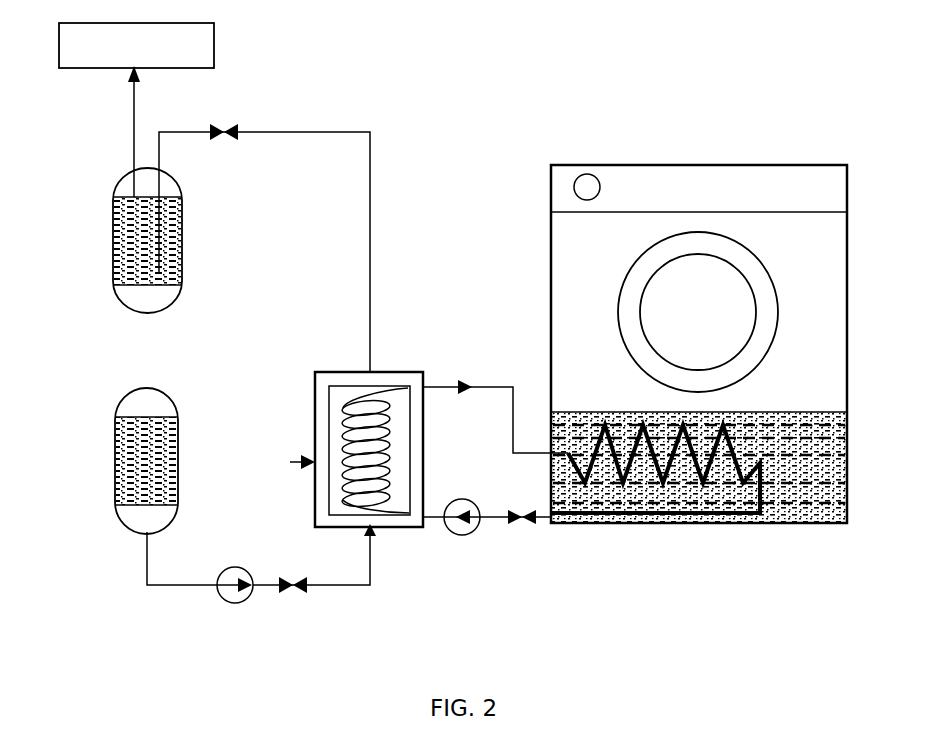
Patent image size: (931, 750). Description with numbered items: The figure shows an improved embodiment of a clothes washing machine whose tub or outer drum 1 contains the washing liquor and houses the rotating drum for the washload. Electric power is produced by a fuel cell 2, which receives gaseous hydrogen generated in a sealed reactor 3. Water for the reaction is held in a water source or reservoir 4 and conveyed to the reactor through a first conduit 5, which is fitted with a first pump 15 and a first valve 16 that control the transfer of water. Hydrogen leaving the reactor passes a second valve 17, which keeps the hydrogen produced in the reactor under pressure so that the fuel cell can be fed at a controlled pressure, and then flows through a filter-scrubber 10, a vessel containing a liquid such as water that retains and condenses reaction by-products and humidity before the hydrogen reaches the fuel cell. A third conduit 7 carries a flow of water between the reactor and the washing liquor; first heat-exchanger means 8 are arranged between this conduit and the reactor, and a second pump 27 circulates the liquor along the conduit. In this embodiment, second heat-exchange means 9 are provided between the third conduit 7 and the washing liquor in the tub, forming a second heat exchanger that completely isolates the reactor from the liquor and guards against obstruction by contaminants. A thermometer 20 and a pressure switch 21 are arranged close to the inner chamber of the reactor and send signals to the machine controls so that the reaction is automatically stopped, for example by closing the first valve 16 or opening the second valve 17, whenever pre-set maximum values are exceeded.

The tub or outer drum 1 is at (825, 467).
The fuel cell 2 is at (212, 34).
The sealed reactor 3 is at (300, 462).
The water source or reservoir 4 is at (115, 440).
The first conduit 5 is at (182, 585).
The third conduit 7 is at (488, 381).
The first heat-exchanger means 8 is at (412, 448).
The second heat-exchange means 9 is at (725, 427).
The filter-scrubber 10 is at (180, 212).
The first pump 15 is at (224, 612).
The first valve 16 is at (293, 593).
The second valve 17 is at (226, 125).
The thermometer 20 is at (336, 384).
The pressure switch 21 is at (330, 424).
The second pump 27 is at (466, 525).